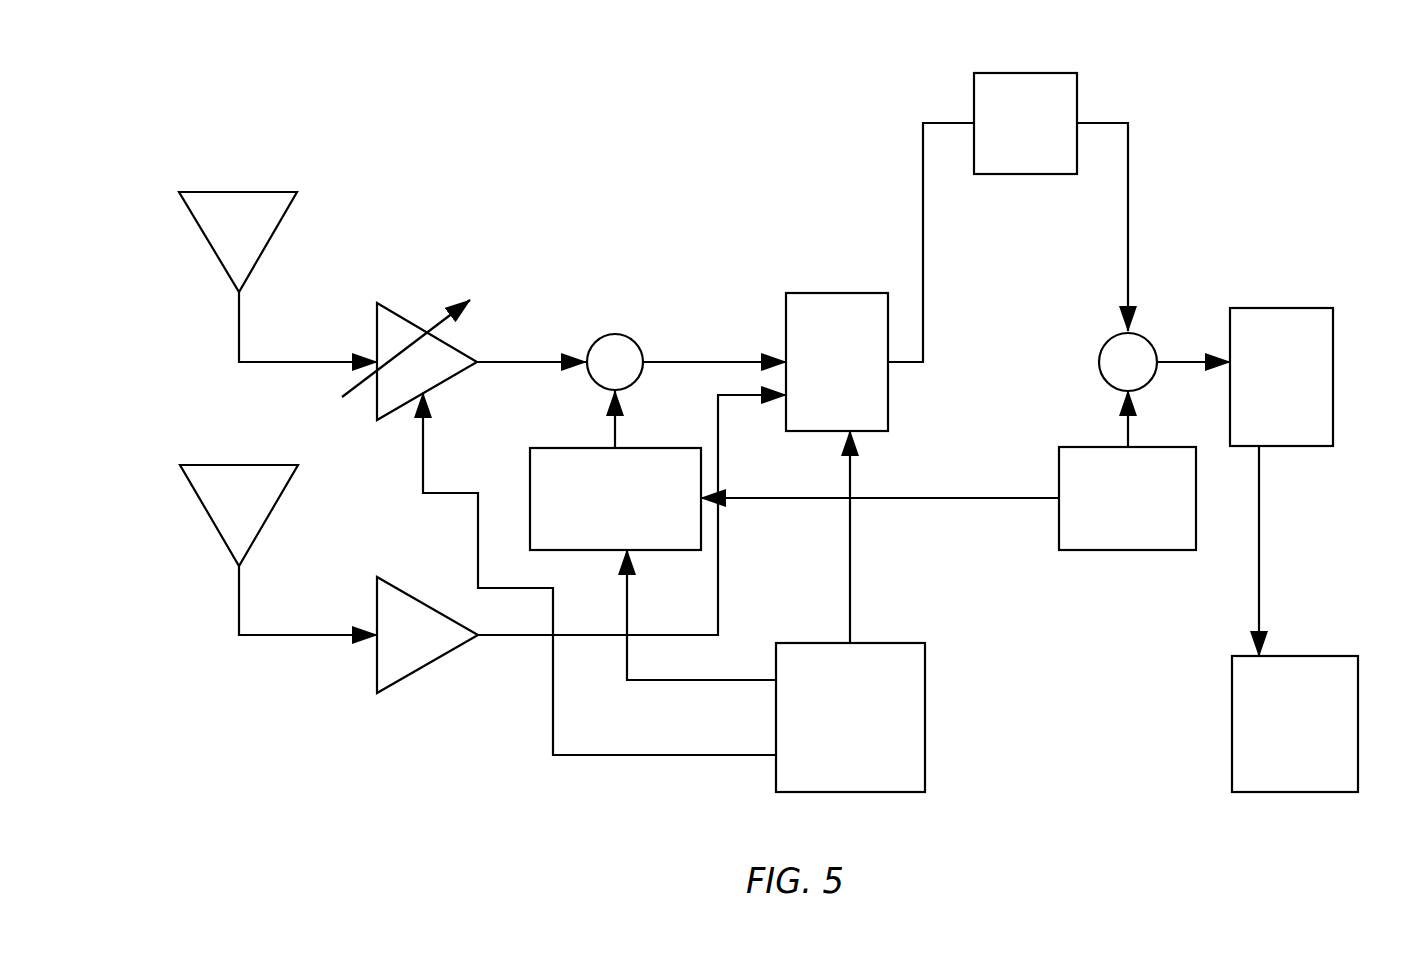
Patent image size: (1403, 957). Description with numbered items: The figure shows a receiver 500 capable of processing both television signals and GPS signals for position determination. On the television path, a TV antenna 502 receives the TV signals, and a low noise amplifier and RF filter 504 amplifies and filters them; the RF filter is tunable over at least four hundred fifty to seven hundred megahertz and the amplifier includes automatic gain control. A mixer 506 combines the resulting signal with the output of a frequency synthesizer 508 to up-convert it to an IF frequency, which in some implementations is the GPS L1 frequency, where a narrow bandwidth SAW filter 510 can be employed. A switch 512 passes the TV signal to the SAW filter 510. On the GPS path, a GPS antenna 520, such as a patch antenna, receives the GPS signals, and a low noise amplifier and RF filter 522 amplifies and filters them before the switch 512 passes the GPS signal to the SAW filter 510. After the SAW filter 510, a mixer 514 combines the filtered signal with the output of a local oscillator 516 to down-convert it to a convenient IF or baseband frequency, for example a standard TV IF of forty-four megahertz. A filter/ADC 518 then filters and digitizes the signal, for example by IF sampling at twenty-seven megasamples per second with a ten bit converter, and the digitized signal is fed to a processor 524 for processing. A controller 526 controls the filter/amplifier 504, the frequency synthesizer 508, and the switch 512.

The receiver 500 is at (735, 72).
The TV antenna 502 is at (205, 237).
The low noise amplifier and RF filter 504 is at (377, 328).
The mixer 506 is at (615, 332).
The frequency synthesizer 508 is at (530, 457).
The SAW filter 510 is at (1032, 174).
The switch 512 is at (833, 293).
The mixer 514 is at (1100, 362).
The local oscillator 516 is at (1128, 550).
The filter/ADC 518 is at (1277, 308).
The GPS antenna 520 is at (210, 515).
The low noise amplifier and RF filter 522 is at (377, 693).
The processor 524 is at (1302, 656).
The controller 526 is at (925, 718).